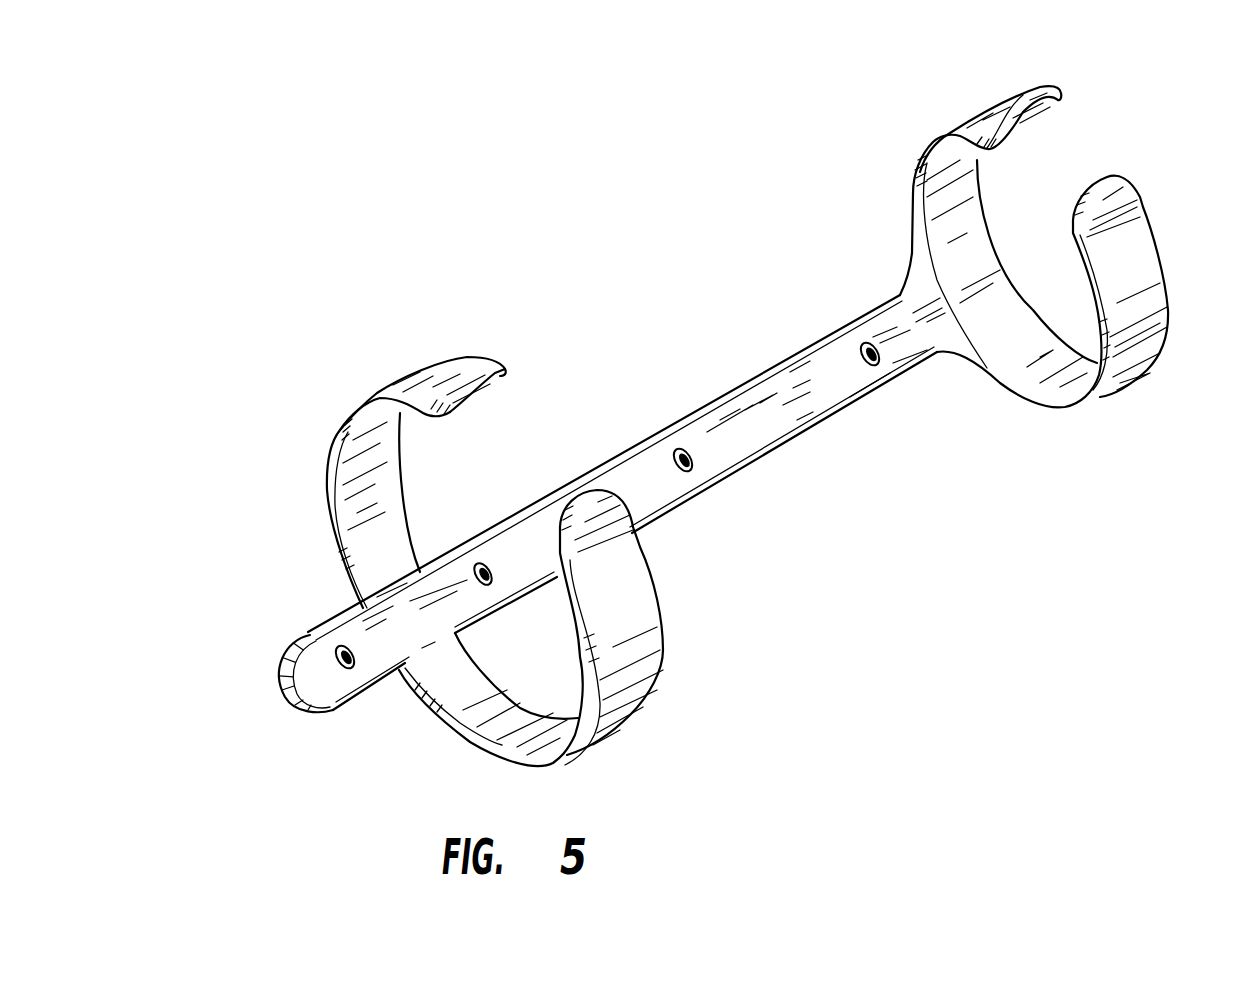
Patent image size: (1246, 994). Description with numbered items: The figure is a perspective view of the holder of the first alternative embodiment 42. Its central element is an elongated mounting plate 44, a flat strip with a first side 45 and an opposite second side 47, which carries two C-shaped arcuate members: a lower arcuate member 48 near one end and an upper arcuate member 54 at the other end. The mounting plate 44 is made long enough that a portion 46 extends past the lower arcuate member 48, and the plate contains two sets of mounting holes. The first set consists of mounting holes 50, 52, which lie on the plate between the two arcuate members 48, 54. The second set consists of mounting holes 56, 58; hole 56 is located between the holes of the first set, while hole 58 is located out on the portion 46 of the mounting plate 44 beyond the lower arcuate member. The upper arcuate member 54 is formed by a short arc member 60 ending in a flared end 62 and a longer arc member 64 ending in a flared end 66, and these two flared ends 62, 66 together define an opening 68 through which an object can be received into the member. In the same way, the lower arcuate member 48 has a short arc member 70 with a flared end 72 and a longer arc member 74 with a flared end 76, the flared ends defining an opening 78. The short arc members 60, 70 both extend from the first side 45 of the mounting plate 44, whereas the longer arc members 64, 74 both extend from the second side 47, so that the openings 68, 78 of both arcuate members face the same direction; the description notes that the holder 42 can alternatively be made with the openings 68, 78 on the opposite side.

The first alternative embodiment 42 is at (655, 228).
The mounting plate 44 is at (833, 410).
The first side 45 is at (720, 398).
The portion 46 is at (308, 687).
The second side 47 is at (747, 467).
The lower arcuate member 48 is at (289, 424).
The mounting hole 50 is at (877, 360).
The mounting hole 52 is at (481, 560).
The upper arcuate member 54 is at (956, 104).
The mounting hole 56 is at (693, 463).
The mounting hole 58 is at (338, 650).
The short arc member 60 is at (910, 188).
The flared end 62 is at (1027, 87).
The longer arc member 64 is at (1160, 268).
The flared end 66 is at (1103, 178).
The opening 68 is at (1071, 143).
The short arc member 70 is at (328, 474).
The flared end 72 is at (484, 358).
The longer arc member 74 is at (655, 630).
The flared end 76 is at (592, 489).
The opening 78 is at (534, 402).